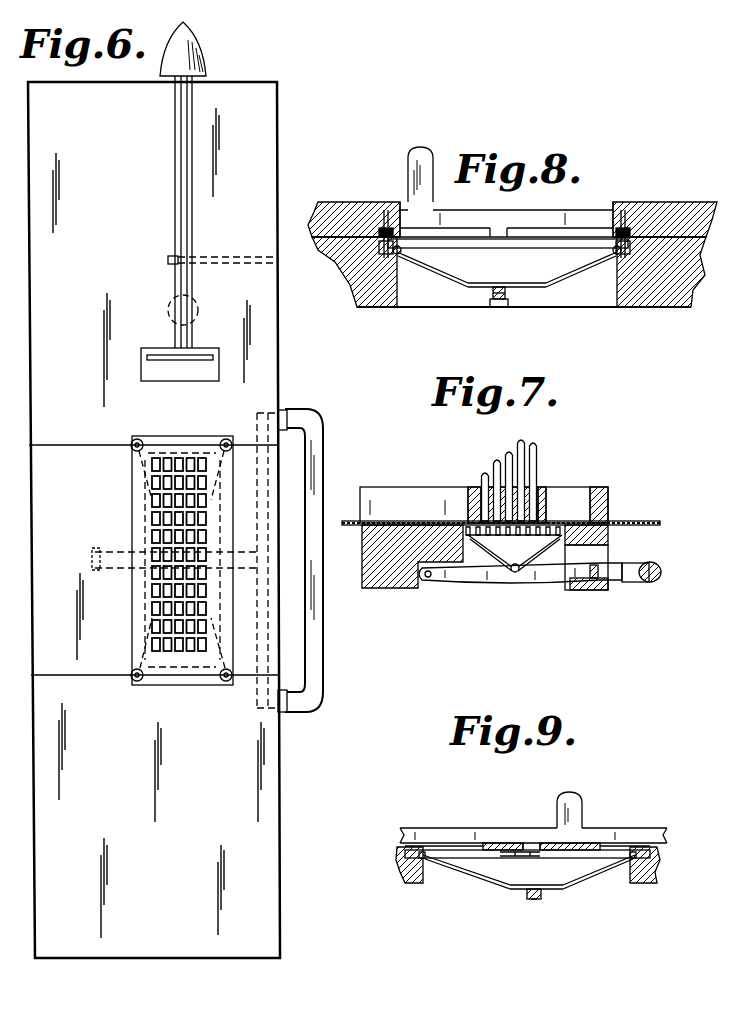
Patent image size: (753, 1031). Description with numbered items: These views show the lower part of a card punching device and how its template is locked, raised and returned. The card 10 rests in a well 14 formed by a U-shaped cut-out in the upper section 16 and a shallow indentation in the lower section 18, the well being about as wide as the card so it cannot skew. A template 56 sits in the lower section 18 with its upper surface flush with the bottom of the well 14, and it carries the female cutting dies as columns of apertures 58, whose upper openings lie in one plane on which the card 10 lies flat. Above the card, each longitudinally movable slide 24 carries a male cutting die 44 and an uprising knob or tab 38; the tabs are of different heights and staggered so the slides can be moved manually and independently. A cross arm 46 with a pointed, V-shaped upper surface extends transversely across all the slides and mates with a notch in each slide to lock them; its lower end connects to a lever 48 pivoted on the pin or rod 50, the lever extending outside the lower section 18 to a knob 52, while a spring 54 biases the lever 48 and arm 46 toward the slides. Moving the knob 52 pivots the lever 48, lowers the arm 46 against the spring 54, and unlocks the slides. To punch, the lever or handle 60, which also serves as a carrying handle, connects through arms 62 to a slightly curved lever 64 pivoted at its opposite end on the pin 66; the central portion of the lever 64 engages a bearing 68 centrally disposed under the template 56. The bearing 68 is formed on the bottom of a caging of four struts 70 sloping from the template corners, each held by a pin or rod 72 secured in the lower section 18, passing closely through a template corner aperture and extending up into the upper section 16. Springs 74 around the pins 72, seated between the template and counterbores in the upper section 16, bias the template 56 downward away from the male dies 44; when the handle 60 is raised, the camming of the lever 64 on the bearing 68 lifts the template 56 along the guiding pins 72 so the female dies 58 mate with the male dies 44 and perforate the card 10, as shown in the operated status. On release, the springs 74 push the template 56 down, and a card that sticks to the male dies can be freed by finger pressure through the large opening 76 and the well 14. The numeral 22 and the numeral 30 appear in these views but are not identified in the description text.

In FIG. 7, the card 10 is at (626, 521).
In FIG. 9, the card 10 is at (500, 843).
In FIG. 7, the well 14 is at (428, 512).
In FIG. 8, the upper section 16 is at (660, 202).
In FIG. 7, the upper section 16 is at (610, 497).
In FIG. 6, the lower section 18 is at (277, 372).
In FIG. 8, the lower section 18 is at (652, 307).
In FIG. 7, the lower section 18 is at (385, 588).
In FIG. 9, the lower section 18 is at (650, 883).
In FIG. 8, the cover plate 22 is at (560, 210).
In FIG. 7, the cover plate 22 is at (540, 493).
In FIG. 7, the slide 24 is at (528, 487).
In FIG. 9, the slide 24 is at (615, 828).
In FIG. 7, the insert block 30 is at (478, 486).
In FIG. 8, the knob or tab 38 is at (420, 147).
In FIG. 7, the knob or tab 38 is at (482, 487).
In FIG. 9, the knob or tab 38 is at (582, 800).
In FIG. 8, the male cutting die 44 is at (512, 229).
In FIG. 9, the male cutting die 44 is at (530, 843).
In FIG. 6, the cross arm 46 is at (178, 361).
In FIG. 6, the lever 48 is at (175, 193).
In FIG. 6, the pin or rod 50 is at (210, 265).
In FIG. 6, the knob 52 is at (206, 50).
In FIG. 6, the spring 54 is at (199, 308).
In FIG. 6, the template 56 is at (197, 436).
In FIG. 8, the template 56 is at (505, 248).
In FIG. 9, the template 56 is at (486, 858).
In FIG. 6, the apertures 58 is at (151, 545).
In FIG. 7, the apertures 58 is at (512, 537).
In FIG. 9, the apertures 58 is at (522, 858).
In FIG. 6, the lever or handle 60 is at (324, 447).
In FIG. 7, the lever or handle 60 is at (650, 563).
In FIG. 6, the arms 62 is at (257, 497).
In FIG. 7, the arms 62 is at (596, 564).
In FIG. 6, the lever 64 is at (118, 572).
In FIG. 8, the lever 64 is at (492, 294).
In FIG. 7, the lever 64 is at (555, 584).
In FIG. 9, the lever 64 is at (541, 899).
In FIG. 6, the pin 66 is at (95, 548).
In FIG. 7, the pin 66 is at (428, 578).
In FIG. 8, the bearing 68 is at (508, 289).
In FIG. 7, the bearing 68 is at (522, 580).
In FIG. 9, the bearing 68 is at (527, 895).
In FIG. 6, the struts 70 is at (140, 482).
In FIG. 8, the struts 70 is at (436, 273).
In FIG. 7, the struts 70 is at (492, 553).
In FIG. 9, the struts 70 is at (468, 880).
In FIG. 6, the pin or rod 72 is at (140, 439).
In FIG. 8, the pin or rod 72 is at (385, 212).
In FIG. 9, the pin or rod 72 is at (424, 860).
In FIG. 8, the springs 74 is at (400, 230).
In FIG. 7, the large opening 76 is at (590, 506).